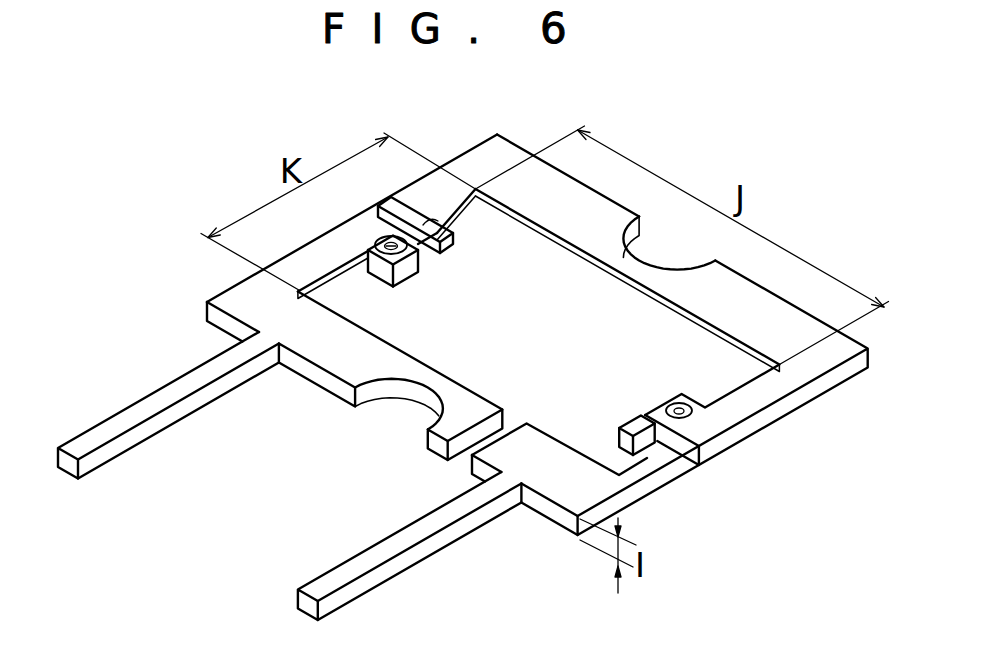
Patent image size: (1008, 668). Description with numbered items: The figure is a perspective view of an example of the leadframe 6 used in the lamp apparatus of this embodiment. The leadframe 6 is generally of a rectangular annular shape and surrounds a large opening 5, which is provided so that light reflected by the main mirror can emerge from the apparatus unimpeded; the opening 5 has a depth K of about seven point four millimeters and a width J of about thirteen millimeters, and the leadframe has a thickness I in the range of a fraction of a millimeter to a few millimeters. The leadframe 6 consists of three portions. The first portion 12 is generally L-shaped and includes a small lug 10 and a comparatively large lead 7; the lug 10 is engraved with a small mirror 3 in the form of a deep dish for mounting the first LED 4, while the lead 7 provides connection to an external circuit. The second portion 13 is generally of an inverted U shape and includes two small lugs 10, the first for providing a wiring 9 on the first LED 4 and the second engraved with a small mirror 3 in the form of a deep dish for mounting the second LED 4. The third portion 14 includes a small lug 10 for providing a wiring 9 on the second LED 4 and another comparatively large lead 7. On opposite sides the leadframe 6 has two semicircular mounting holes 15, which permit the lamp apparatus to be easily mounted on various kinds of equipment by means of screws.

The small mirror 3 is at (392, 256).
The LED 4 is at (405, 268).
The opening 5 is at (565, 305).
The leadframe 6 is at (718, 148).
The lead 7 is at (153, 410).
The wiring 9 is at (400, 218).
The lug 10 is at (457, 235).
The first portion 12 is at (235, 294).
The second portion 13 is at (498, 153).
The third portion 14 is at (580, 497).
The semicircular mounting hole 15 is at (398, 393).